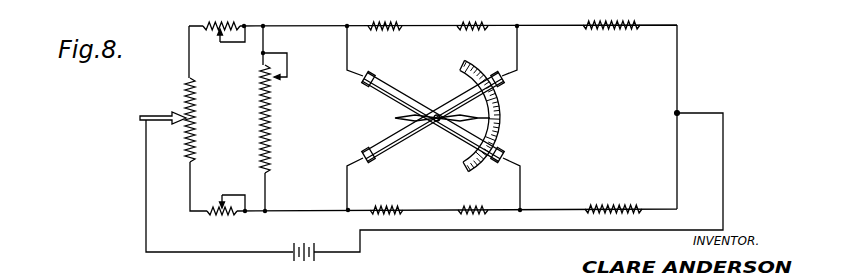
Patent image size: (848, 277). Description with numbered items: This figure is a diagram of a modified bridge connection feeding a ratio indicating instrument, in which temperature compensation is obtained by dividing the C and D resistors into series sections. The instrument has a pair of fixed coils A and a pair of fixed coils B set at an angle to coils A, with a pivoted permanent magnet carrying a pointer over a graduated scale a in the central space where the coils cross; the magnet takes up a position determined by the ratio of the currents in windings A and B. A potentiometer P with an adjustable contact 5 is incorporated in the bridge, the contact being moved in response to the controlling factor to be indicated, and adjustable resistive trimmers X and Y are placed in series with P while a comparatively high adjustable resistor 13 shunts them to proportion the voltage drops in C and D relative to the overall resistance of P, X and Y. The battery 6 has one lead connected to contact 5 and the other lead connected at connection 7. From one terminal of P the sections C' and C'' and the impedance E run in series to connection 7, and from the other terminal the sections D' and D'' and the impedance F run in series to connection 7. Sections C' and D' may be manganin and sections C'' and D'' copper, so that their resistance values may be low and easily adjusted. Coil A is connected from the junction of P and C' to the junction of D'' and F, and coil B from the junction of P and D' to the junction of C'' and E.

The adjustable resistive trimmer X is at (224, 21).
The adjustable resistive trimmer Y is at (226, 217).
The resistor section C' is at (385, 15).
The resistor section C'' is at (472, 15).
The impedance device E is at (611, 14).
The resistor section D' is at (386, 200).
The resistor section D'' is at (473, 200).
The impedance device F is at (613, 197).
The potentiometer P is at (179, 120).
The adjustable resistor 13 is at (274, 116).
The adjustable contact 5 is at (172, 112).
The source 6 is at (310, 259).
The connection 7 is at (668, 116).
The fixed coils A is at (384, 80).
The fixed coils B is at (374, 141).
The indicating needle and scale a is at (489, 112).